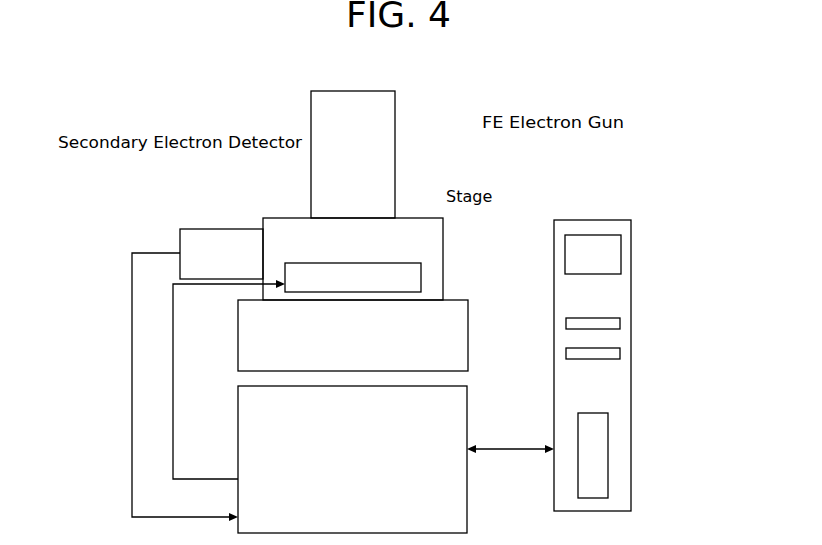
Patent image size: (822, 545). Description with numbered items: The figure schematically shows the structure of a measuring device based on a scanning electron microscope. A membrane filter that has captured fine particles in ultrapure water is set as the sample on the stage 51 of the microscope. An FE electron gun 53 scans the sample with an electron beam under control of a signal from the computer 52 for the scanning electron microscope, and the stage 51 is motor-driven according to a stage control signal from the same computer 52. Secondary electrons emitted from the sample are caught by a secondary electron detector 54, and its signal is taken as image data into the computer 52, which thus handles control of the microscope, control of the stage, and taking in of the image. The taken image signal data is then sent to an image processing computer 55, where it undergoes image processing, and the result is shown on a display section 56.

The stage 51 is at (402, 263).
The computer for the scanning electron microscope 52 is at (238, 428).
The FE electron gun 53 is at (395, 123).
The secondary electron detector 54 is at (220, 229).
The image processing computer 55 is at (631, 295).
The display section 56 is at (592, 235).